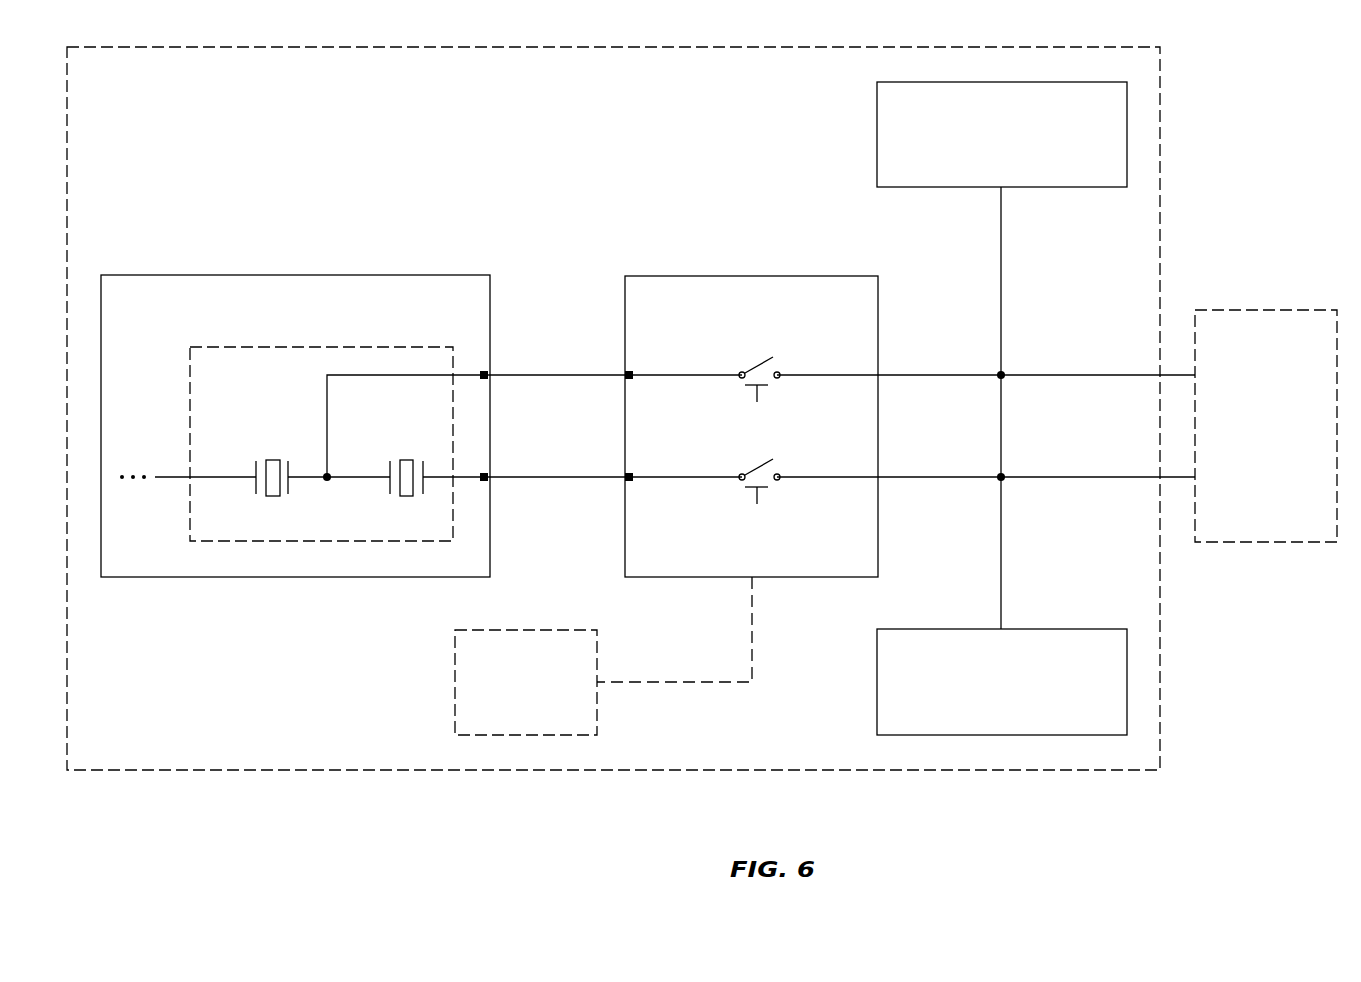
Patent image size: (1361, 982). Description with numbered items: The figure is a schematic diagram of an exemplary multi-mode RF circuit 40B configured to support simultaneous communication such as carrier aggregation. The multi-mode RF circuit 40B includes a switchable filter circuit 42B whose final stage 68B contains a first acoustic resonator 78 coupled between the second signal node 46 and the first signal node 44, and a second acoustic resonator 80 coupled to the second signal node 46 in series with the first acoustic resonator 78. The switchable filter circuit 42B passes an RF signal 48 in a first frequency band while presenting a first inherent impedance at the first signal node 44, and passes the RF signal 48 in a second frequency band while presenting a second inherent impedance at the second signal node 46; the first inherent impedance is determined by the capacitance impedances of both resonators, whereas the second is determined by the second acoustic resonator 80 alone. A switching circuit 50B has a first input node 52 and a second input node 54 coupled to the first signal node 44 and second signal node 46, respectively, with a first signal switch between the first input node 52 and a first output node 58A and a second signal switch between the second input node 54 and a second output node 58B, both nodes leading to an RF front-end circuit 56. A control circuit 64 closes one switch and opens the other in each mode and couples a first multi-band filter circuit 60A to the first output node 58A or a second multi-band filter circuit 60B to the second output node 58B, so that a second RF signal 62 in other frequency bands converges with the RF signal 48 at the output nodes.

The multi-mode RF circuit 40B is at (369, 106).
The switchable filter circuit 42B is at (312, 334).
The final stage 68B is at (243, 387).
The second acoustic resonator 80 is at (255, 467).
The first acoustic resonator 78 is at (389, 467).
The second signal node 46 is at (485, 381).
The first signal node 44 is at (485, 483).
The RF signal 48 is at (580, 372).
The switching circuit 50B is at (771, 337).
The second input node 54 is at (633, 381).
The first input node 52 is at (633, 483).
The control circuit 64 is at (538, 714).
The second multi-band filter circuit 60B is at (1020, 169).
The first multi-band filter circuit 60A is at (1020, 714).
The second RF signal 62 is at (1006, 236).
The second output node 58B is at (1004, 380).
The first output node 58A is at (1004, 482).
The RF front-end circuit 56 is at (1278, 451).